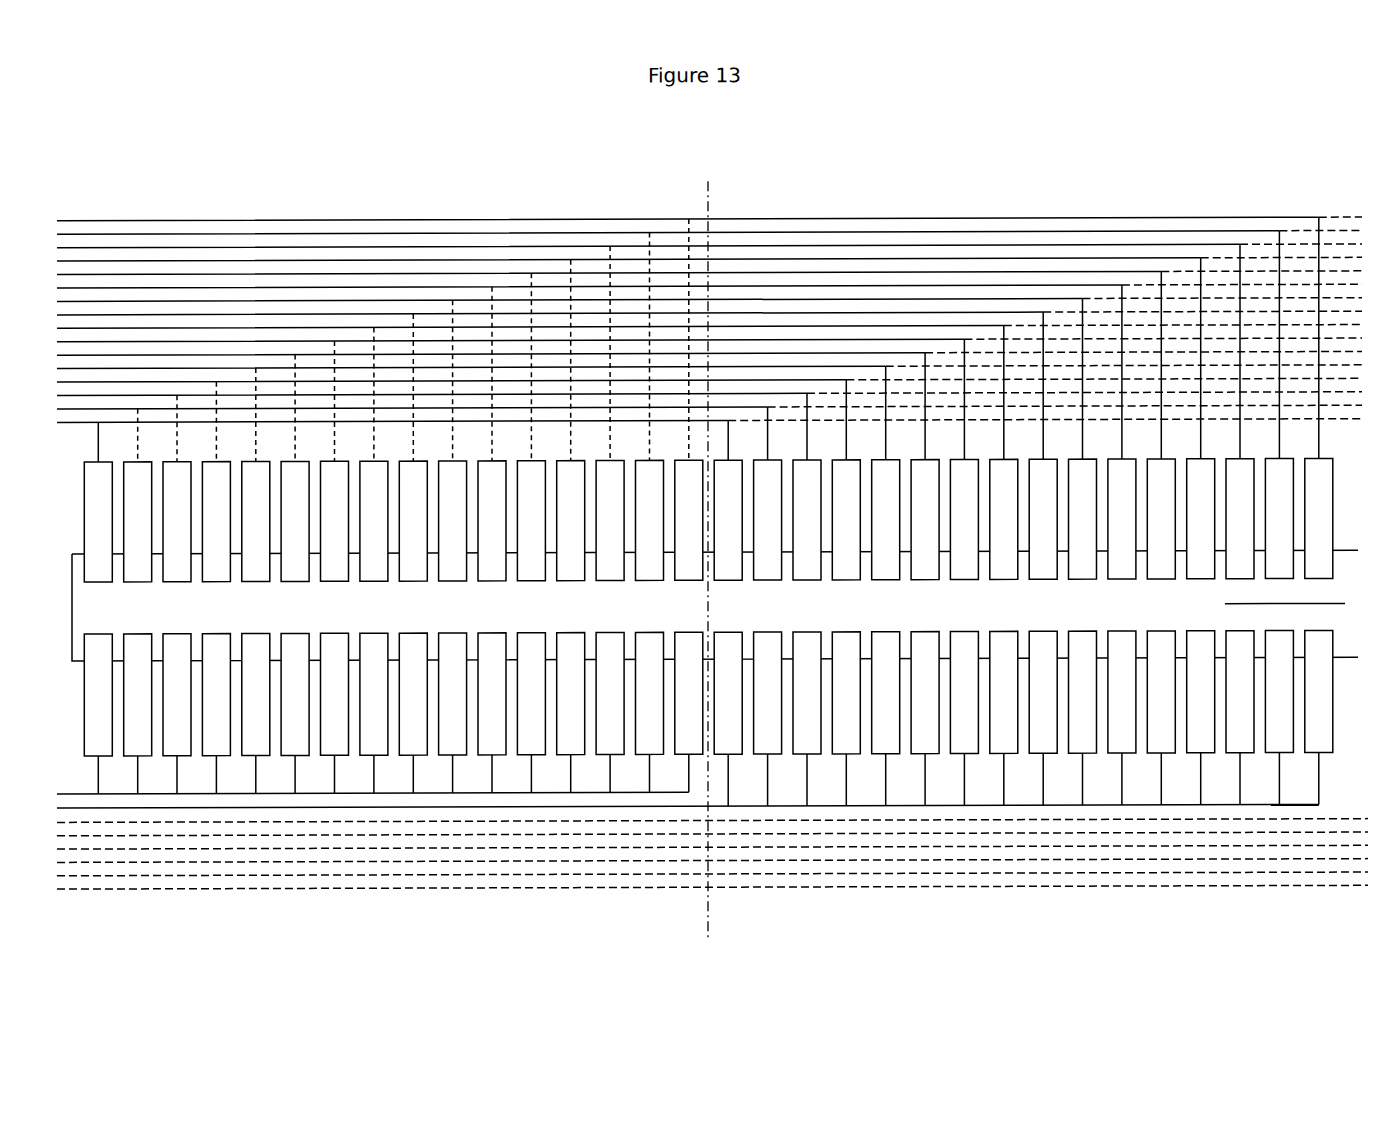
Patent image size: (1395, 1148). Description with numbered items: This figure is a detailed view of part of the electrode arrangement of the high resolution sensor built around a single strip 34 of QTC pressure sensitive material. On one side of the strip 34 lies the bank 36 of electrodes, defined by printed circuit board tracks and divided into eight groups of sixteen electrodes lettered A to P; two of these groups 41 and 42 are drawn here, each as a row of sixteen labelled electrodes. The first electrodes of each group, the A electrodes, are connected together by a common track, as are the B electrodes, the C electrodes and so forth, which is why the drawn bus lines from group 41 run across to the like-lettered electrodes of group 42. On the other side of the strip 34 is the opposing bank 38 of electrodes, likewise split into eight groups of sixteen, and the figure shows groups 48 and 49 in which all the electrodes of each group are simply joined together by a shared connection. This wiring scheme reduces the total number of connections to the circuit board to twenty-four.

The QTC strip 34 is at (1304, 596).
The bank of electrodes 36 is at (1372, 489).
The opposing bank of electrodes 38 is at (1343, 700).
The first electrode group 41 is at (765, 183).
The second electrode group 42 is at (1045, 309).
The electrode group 48 is at (753, 929).
The first electrode group of opposing bank 49 is at (712, 847).